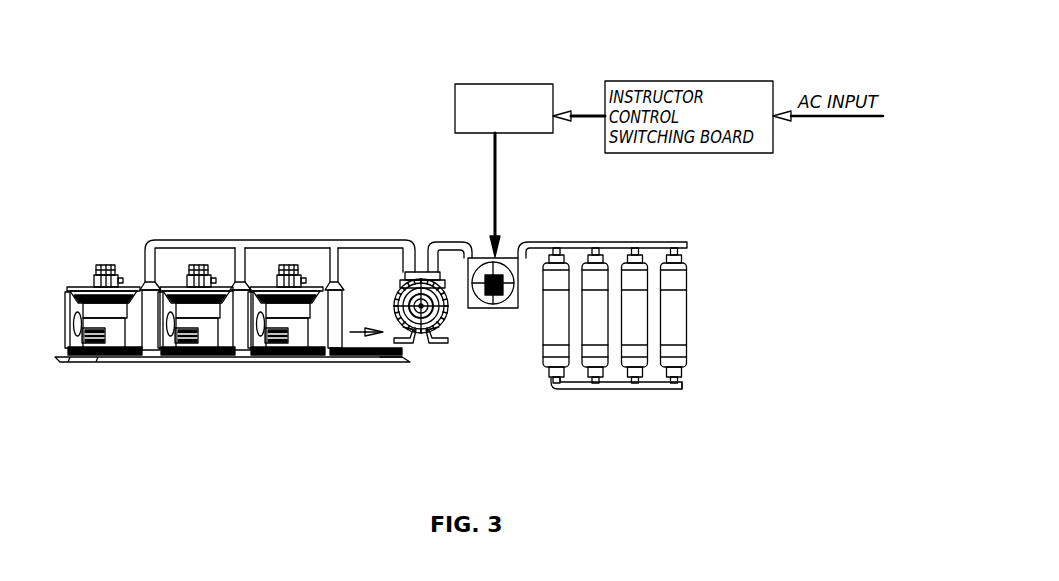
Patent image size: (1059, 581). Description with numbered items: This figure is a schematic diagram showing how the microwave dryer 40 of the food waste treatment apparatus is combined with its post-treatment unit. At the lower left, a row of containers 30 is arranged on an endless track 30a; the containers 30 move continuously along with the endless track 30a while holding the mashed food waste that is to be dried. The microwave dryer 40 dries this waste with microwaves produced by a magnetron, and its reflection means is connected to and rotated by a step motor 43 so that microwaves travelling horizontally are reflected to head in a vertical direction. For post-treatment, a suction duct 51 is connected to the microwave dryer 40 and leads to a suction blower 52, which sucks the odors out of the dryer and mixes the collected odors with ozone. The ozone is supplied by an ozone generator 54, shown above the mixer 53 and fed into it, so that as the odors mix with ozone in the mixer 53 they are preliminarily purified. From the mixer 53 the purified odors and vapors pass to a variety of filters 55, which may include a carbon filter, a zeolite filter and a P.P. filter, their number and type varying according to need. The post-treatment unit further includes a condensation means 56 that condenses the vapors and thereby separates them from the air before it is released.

The containers 30 is at (407, 363).
The endless track 30a is at (392, 365).
The microwave dryer 40 is at (220, 276).
The step motor 43 is at (103, 262).
The suction duct 51 is at (240, 262).
The suction blower 52 is at (409, 271).
The mixer 53 is at (509, 308).
The ozone generator 54 is at (505, 83).
The filters 55 is at (557, 332).
The condensation means 56 is at (672, 308).